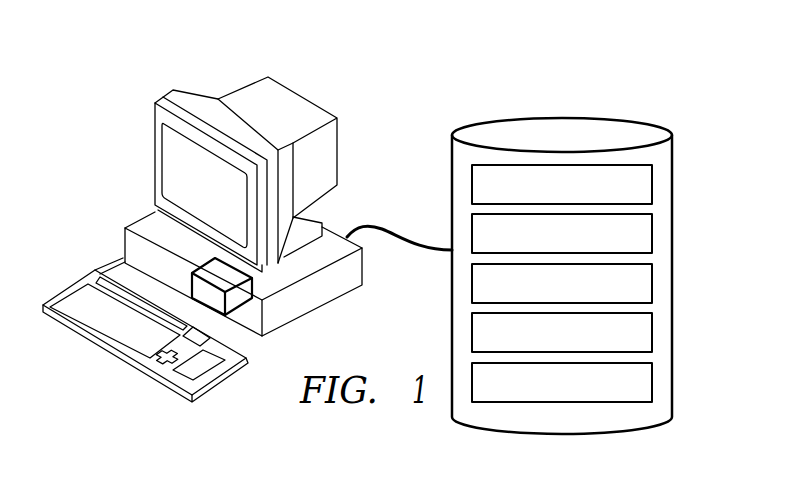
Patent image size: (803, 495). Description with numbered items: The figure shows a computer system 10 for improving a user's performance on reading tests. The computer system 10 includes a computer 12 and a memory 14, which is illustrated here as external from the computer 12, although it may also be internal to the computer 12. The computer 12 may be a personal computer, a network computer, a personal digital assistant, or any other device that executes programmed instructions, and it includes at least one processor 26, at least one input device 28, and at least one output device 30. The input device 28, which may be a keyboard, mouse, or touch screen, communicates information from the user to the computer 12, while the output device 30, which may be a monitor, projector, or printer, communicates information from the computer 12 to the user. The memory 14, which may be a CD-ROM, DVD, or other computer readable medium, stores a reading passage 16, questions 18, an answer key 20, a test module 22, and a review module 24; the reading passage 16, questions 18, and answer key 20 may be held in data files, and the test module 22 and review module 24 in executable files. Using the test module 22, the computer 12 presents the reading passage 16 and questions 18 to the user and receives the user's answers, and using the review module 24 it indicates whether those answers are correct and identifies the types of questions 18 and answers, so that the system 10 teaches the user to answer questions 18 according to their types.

The computer system 10 is at (113, 123).
The computer 12 is at (147, 221).
The memory 14 is at (568, 122).
The reading passage 16 is at (652, 185).
The questions 18 is at (652, 235).
The answer key 20 is at (652, 283).
The test module 22 is at (652, 333).
The review module 24 is at (652, 383).
The processor 26 is at (190, 281).
The input device 28 is at (73, 297).
The output device 30 is at (331, 160).